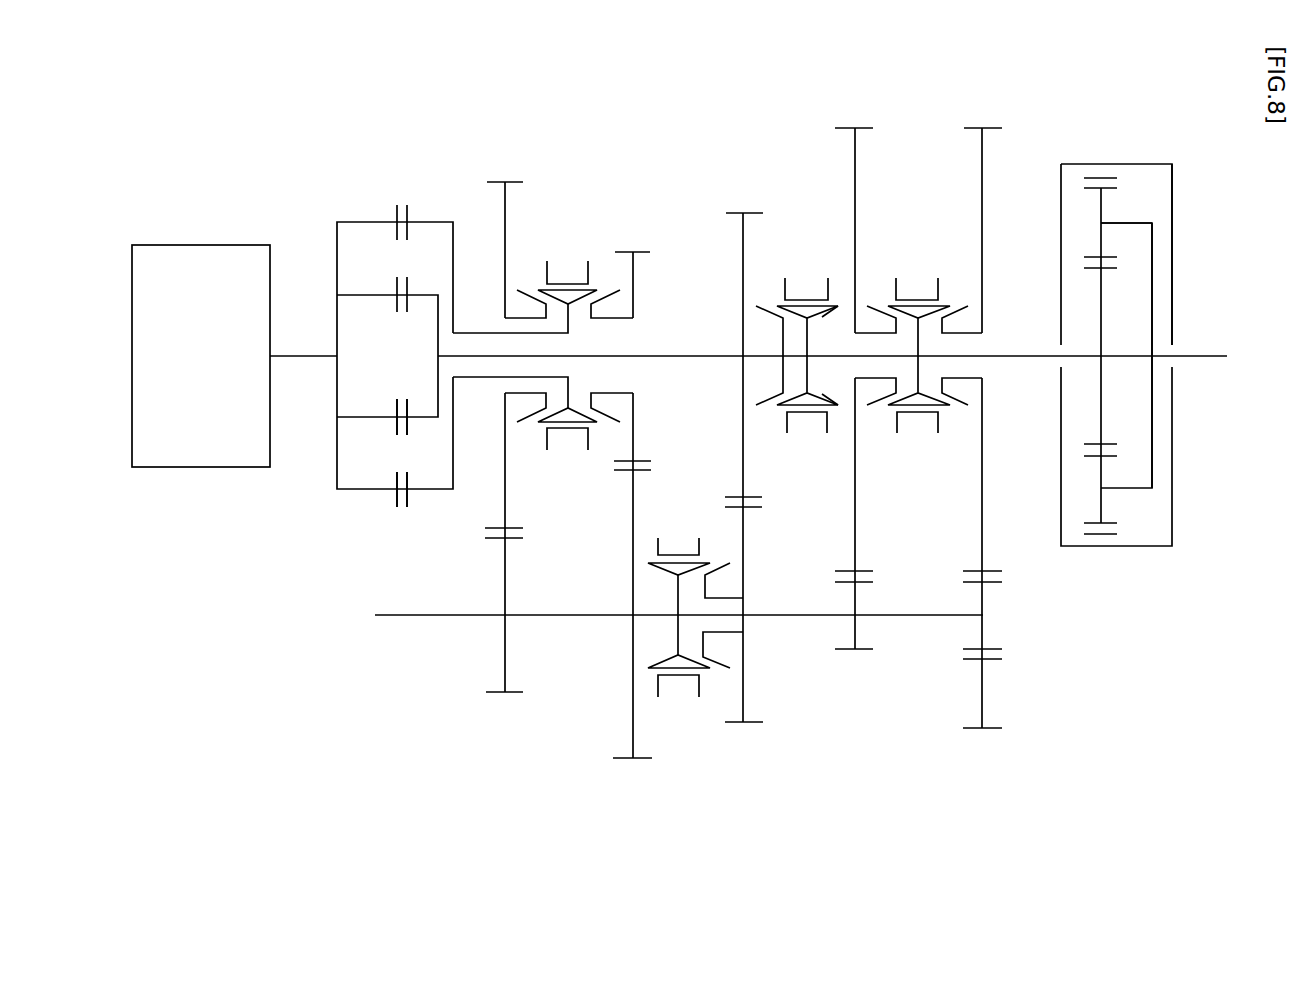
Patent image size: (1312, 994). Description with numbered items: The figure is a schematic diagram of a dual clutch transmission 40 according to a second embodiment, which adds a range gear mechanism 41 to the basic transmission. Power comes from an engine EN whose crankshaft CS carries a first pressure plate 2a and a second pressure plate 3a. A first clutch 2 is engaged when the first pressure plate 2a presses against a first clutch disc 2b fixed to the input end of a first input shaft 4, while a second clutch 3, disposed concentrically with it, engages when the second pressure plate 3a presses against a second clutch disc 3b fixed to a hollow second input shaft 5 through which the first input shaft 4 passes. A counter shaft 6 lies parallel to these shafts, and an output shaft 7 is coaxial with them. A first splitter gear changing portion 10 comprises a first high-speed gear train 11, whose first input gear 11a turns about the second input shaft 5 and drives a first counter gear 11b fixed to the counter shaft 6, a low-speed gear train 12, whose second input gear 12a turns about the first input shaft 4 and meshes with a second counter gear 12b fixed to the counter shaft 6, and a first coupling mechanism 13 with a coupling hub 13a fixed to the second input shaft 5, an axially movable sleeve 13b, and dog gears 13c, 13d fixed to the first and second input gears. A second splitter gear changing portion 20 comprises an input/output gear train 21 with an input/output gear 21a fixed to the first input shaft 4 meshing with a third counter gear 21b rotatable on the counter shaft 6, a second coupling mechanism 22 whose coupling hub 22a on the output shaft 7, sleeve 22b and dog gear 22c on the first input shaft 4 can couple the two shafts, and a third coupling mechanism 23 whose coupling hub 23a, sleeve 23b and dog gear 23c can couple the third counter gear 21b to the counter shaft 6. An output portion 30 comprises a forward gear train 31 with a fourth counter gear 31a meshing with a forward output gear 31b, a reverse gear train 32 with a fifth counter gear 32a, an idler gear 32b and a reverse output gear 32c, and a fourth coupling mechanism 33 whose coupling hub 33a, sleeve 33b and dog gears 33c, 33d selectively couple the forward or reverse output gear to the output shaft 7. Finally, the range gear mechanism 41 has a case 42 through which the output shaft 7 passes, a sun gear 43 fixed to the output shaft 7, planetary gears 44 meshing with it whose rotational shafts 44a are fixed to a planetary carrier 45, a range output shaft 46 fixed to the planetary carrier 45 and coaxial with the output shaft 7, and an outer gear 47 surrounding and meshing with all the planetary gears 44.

The engine EN is at (201, 356).
The crankshaft CS is at (300, 354).
The first clutch 2 is at (397, 364).
The first pressure plate 2a is at (396, 406).
The first clutch disc 2b is at (414, 408).
The second clutch 3 is at (413, 470).
The second pressure plate 3a is at (397, 504).
The second clutch disc 3b is at (410, 504).
The first input shaft 4 is at (686, 354).
The second input shaft 5 is at (484, 332).
The counter shaft 6 is at (570, 613).
The output shaft 7 is at (1020, 354).
The first splitter gear changing portion 10 is at (568, 462).
The first high-speed gear train 11 is at (493, 439).
The first input gear 11a is at (516, 180).
The first counter gear 11b is at (505, 694).
The low-speed gear train 12 is at (651, 482).
The second input gear 12a is at (640, 250).
The second counter gear 12b is at (635, 760).
The first coupling mechanism 13 is at (569, 332).
The coupling hub 13a is at (590, 282).
The sleeve 13b is at (568, 258).
The dog gear 13c is at (563, 274).
The dog gear 13d is at (600, 422).
The second splitter gear changing portion 20 is at (744, 432).
The input/output gear train 21 is at (760, 466).
The input/output gear 21a is at (760, 212).
The third counter gear 21b is at (744, 724).
The second coupling mechanism 22 is at (807, 307).
The coupling hub 22a is at (795, 290).
The sleeve 22b is at (812, 275).
The dog gear 22c is at (770, 302).
The third coupling mechanism 23 is at (687, 585).
The coupling hub 23a is at (672, 574).
The sleeve 23b is at (685, 550).
The dog gear 23c is at (715, 560).
The output portion 30 is at (920, 429).
The forward gear train 31 is at (857, 389).
The fourth counter gear 31a is at (858, 651).
The forward output gear 31b is at (862, 126).
The reverse gear train 32 is at (965, 432).
The fifth counter gear 32a is at (977, 639).
The idler gear 32b is at (985, 730).
The reverse output gear 32c is at (990, 126).
The fourth coupling mechanism 33 is at (918, 328).
The coupling hub 33a is at (958, 322).
The sleeve 33b is at (928, 275).
The dog gear 33c is at (876, 302).
The dog gear 33d is at (940, 425).
The dual clutch transmission 40 is at (1127, 324).
The range gear mechanism 41 is at (1136, 163).
The case 42 is at (1150, 163).
The sun gear 43 is at (1100, 272).
The planetary gears 44 is at (1100, 230).
The rotational shafts 44a is at (1135, 222).
The planetary carrier 45 is at (1153, 258).
The range output shaft 46 is at (1200, 354).
The outer gear 47 is at (1086, 175).